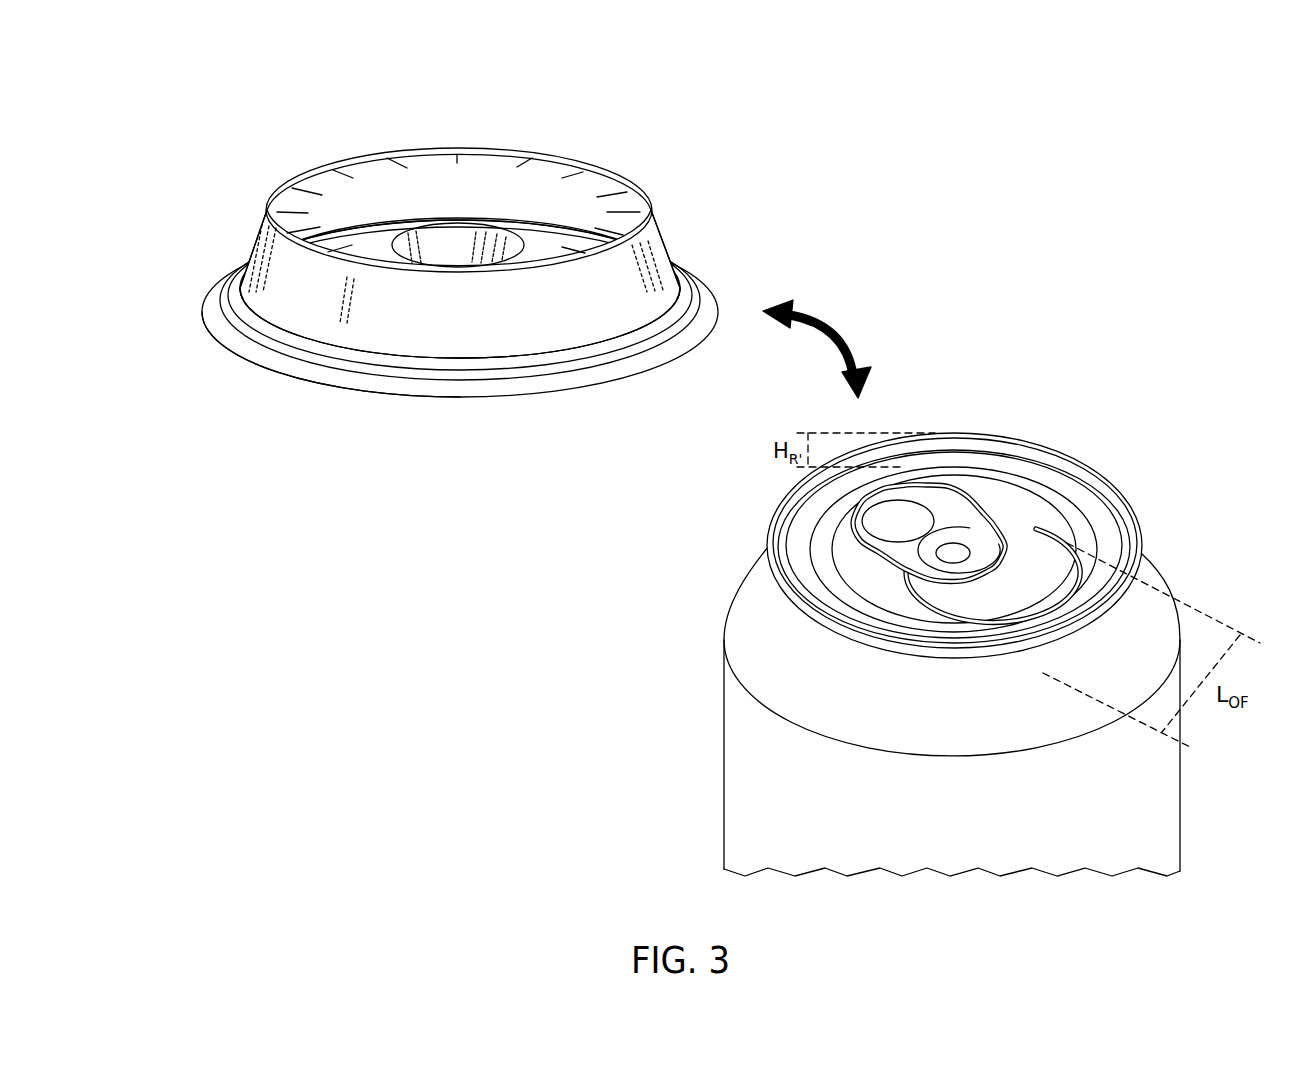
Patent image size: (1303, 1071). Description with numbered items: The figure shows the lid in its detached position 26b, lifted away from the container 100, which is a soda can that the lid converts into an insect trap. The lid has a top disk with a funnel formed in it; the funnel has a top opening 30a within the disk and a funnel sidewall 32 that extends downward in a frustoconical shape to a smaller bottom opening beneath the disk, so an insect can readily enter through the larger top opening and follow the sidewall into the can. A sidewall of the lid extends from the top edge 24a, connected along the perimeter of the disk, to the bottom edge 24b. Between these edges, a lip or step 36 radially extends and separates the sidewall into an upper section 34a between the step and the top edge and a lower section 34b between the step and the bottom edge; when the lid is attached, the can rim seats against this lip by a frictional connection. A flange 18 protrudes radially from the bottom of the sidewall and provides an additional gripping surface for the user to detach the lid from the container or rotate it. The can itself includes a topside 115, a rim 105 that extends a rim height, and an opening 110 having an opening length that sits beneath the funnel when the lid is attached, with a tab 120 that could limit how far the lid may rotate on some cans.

The detached position 26b is at (237, 147).
The funnel sidewall 32 is at (443, 241).
The top opening 30a is at (471, 225).
The top edge 24a is at (277, 230).
The bottom edge 24b is at (247, 330).
The flange 18 is at (268, 354).
The upper section 34a is at (652, 263).
The lower section 34b is at (692, 304).
The lip or step 36 is at (647, 325).
The container 100 is at (750, 769).
The rim 105 is at (774, 517).
The opening 110 is at (967, 597).
The topside 115 is at (999, 507).
The tab 120 is at (939, 506).